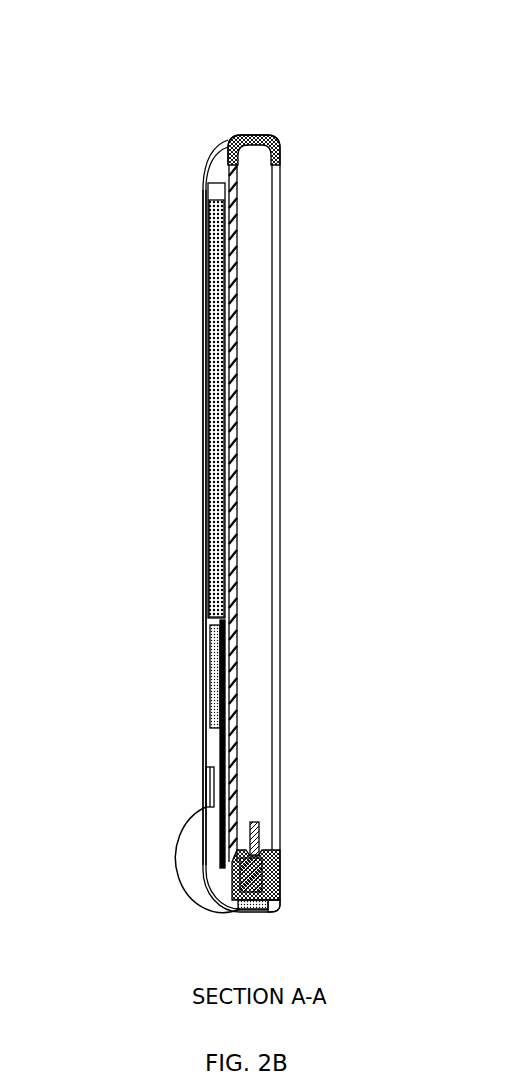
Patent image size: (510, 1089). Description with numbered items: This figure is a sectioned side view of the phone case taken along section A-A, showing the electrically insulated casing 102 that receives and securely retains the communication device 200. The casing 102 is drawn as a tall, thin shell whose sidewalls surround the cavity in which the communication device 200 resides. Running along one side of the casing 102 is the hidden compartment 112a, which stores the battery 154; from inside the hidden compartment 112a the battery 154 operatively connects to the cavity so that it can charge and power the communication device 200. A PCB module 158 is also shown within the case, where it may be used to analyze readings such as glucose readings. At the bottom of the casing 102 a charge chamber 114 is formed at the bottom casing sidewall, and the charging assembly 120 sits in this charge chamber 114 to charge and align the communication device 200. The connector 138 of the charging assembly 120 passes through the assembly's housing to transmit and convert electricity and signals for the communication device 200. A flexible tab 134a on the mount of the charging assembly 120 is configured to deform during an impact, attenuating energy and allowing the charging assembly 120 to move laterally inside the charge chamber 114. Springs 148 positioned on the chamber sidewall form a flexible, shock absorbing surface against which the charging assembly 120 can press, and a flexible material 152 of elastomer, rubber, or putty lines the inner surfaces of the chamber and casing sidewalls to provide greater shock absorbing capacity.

The casing 102 is at (281, 461).
The flexible material 152 is at (227, 143).
The communication device 200 is at (204, 254).
The battery 154 is at (205, 437).
The hidden compartment 112a is at (203, 556).
The PCB module 158 is at (204, 825).
The springs 148 is at (222, 858).
The connector 138 is at (254, 821).
The flexible tab 134a is at (281, 867).
The charge chamber 114 is at (239, 910).
The charging assembly 120 is at (272, 893).